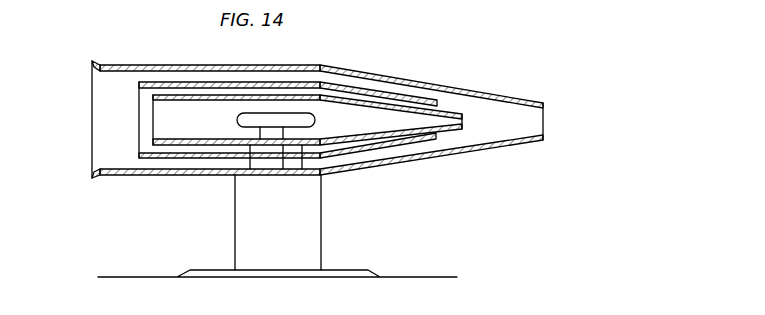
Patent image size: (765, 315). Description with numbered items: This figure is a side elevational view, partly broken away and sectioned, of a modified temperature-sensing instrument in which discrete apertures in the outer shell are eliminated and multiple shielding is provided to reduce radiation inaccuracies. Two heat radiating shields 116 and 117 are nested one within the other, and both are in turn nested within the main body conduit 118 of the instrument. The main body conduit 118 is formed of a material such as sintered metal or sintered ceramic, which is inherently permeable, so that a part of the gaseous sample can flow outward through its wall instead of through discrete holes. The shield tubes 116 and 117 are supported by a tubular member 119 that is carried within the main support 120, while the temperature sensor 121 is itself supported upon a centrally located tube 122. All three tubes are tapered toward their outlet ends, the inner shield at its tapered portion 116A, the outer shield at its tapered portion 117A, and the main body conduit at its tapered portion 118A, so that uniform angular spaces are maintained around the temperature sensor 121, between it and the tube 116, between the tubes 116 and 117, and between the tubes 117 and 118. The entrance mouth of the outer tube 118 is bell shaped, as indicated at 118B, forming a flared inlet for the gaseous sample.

The heat radiating shield 116 is at (300, 96).
The tapered portion of shield 116 116A is at (448, 132).
The heat radiating shield 117 is at (250, 82).
The tapered portion of shield 117 117A is at (370, 89).
The main body conduit 118 is at (185, 65).
The tapered portion of main body conduit 118A is at (488, 93).
The bell shaped entrance mouth 118B is at (100, 60).
The tubular member 119 is at (294, 161).
The main support 120 is at (302, 221).
The temperature sensor 121 is at (237, 117).
The centrally located tube 122 is at (290, 131).